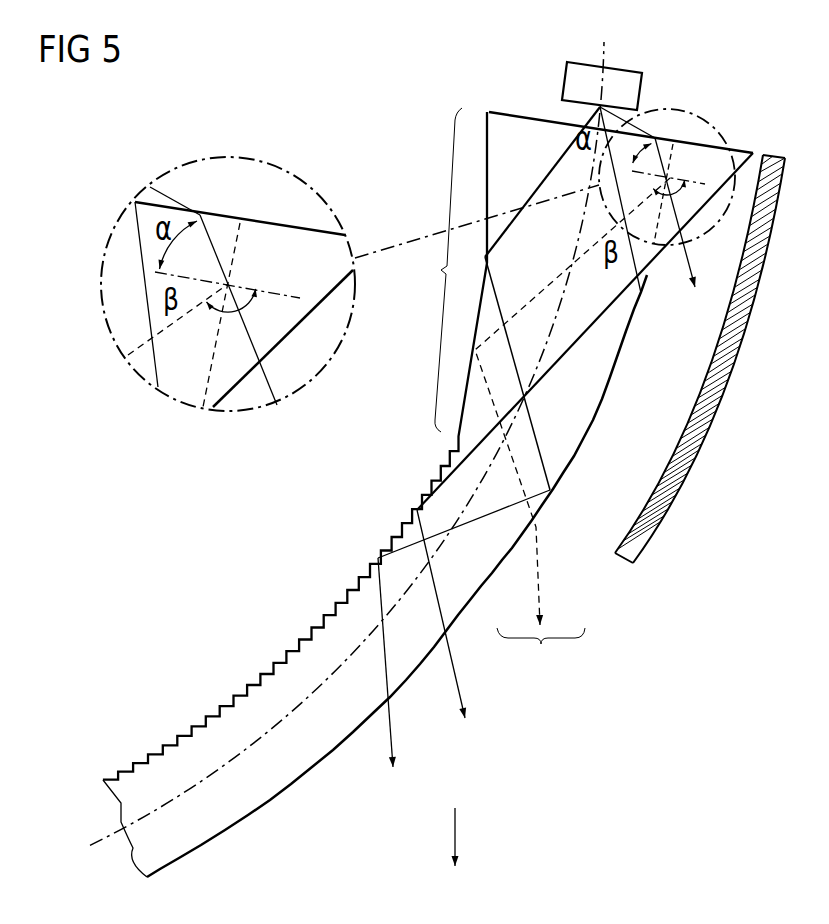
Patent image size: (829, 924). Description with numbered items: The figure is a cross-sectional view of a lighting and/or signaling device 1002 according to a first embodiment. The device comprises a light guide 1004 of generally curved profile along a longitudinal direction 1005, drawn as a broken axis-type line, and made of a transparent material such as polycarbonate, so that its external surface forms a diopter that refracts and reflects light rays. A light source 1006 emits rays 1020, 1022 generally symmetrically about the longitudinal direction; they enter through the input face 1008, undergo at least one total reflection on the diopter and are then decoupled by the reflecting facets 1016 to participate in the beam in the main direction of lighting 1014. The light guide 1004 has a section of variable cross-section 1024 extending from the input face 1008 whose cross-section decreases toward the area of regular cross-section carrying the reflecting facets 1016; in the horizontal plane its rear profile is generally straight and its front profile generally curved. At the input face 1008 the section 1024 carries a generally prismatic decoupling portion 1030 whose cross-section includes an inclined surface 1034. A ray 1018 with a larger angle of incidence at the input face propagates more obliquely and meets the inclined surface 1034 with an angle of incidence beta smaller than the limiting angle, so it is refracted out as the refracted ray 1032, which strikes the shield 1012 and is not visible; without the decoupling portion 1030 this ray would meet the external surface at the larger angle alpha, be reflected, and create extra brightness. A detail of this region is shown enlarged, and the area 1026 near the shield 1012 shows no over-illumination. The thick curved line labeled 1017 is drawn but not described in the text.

The lighting and/or signaling device 1002 is at (370, 148).
The light guide 1004 is at (428, 494).
The longitudinal direction 1005 is at (612, 50).
The light source 1006 is at (568, 72).
The input face 1008 is at (517, 112).
The shield 1012 is at (662, 497).
The main direction of lighting 1014 is at (455, 830).
The reflecting facets 1016 is at (349, 583).
The reflecting surface 1017 is at (293, 783).
The ray 1018 is at (643, 123).
The ray 1020 is at (535, 186).
The ray 1022 is at (582, 168).
The section of variable cross-section 1024 is at (426, 270).
The area 1026 is at (541, 651).
The decoupling portion 1030 is at (272, 242).
The refracted ray 1032 is at (690, 272).
The inclined surface 1034 is at (293, 330).